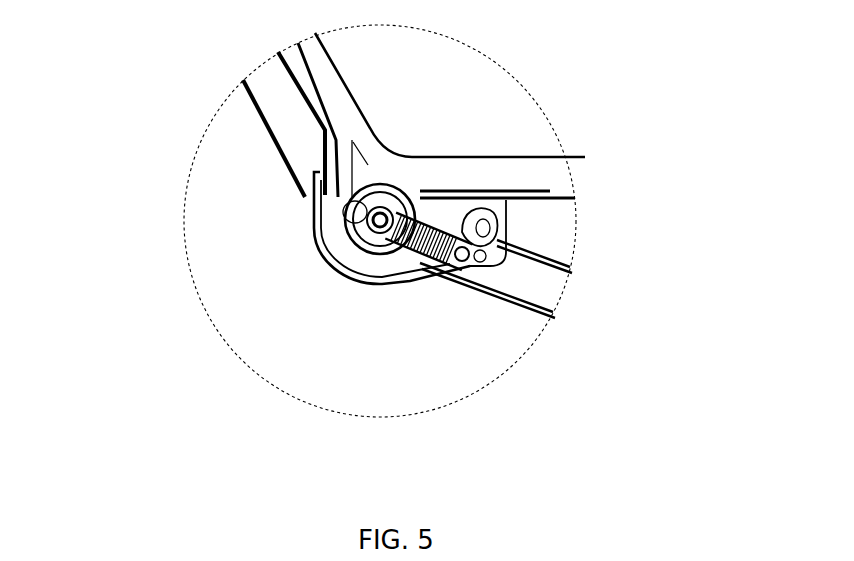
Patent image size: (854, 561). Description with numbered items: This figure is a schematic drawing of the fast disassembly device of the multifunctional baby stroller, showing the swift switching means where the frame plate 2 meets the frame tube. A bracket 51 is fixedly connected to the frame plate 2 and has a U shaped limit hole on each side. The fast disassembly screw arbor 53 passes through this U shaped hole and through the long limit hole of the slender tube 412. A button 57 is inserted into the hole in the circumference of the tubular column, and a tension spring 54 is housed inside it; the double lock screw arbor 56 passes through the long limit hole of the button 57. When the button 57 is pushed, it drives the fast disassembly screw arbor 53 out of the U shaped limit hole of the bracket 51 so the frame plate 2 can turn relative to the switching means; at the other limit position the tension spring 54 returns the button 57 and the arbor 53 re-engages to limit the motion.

The frame plate 2 is at (450, 172).
The bracket 51 is at (440, 220).
The fast disassembly screw arbor 53 is at (497, 268).
The tension spring 54 is at (507, 200).
The double lock screw arbor 56 is at (340, 237).
The button 57 is at (312, 189).
The slender tube 412 is at (355, 276).